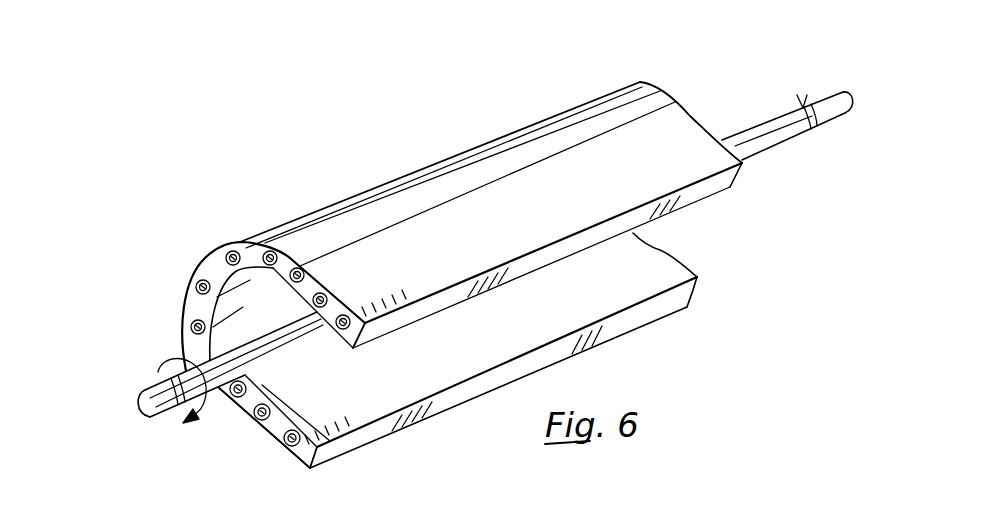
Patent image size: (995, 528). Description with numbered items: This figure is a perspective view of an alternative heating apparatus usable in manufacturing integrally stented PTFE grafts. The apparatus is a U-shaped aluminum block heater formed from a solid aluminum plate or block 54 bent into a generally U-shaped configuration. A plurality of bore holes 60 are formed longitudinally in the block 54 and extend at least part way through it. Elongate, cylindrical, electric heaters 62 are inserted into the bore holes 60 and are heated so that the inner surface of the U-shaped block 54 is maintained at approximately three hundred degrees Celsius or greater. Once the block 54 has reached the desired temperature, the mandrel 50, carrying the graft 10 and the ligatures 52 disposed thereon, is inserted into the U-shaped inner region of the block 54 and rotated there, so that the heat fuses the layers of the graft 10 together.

The graft 10 is at (740, 134).
The mandrel 50 is at (835, 102).
The ligatures 52 is at (172, 377).
The U-shaped aluminum block 54 is at (602, 103).
The bore holes 60 is at (295, 264).
The cylindrical electric heaters 62 is at (224, 255).